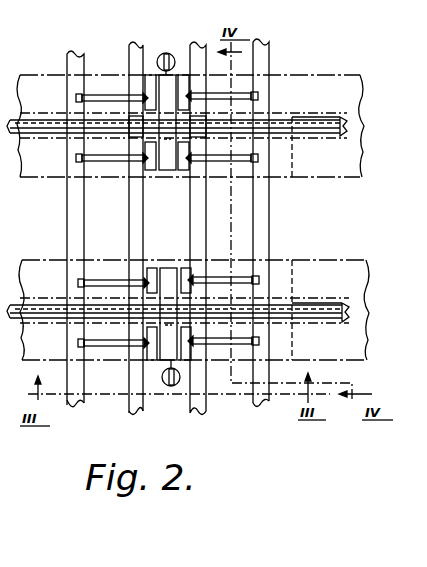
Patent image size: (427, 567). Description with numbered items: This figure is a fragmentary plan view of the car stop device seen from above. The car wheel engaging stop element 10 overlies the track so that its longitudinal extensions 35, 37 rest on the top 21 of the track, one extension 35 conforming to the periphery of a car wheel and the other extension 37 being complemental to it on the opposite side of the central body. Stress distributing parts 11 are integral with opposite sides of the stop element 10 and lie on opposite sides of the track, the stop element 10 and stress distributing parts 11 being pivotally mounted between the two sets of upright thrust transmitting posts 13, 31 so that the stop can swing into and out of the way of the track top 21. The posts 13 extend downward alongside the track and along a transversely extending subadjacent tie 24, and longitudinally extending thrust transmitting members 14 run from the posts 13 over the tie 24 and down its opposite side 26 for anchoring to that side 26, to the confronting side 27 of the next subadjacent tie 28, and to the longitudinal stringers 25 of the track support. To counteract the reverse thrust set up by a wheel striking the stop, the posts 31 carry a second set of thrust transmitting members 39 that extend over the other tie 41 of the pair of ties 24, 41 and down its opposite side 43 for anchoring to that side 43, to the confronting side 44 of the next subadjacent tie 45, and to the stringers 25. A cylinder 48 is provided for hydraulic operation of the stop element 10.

The stop element 10 is at (178, 218).
The stress distributing parts 11 is at (168, 217).
The upright thrust transmitting posts 13 is at (185, 266).
The longitudinally extending thrust transmitting members 14 is at (240, 93).
The top of the track 21 is at (324, 124).
The subadjacent tie 24 is at (194, 200).
The longitudinal stringer 25 is at (347, 78).
The opposite side of the tie 26 is at (256, 405).
The confronting side of the next subadjacent tie 27 is at (271, 404).
The next subadjacent tie 28 is at (262, 213).
The posts 31 is at (152, 268).
The longitudinal extension 35 is at (140, 128).
The longitudinal extension 37 is at (198, 137).
The longitudinally extending thrust transmitting members 39 is at (103, 94).
The other tie 41 is at (136, 251).
The opposite side of the other tie 43 is at (134, 412).
The confronting side of the next subadjacent tie 44 is at (75, 405).
The next subadjacent tie 45 is at (72, 221).
The cylinder 48 is at (170, 52).